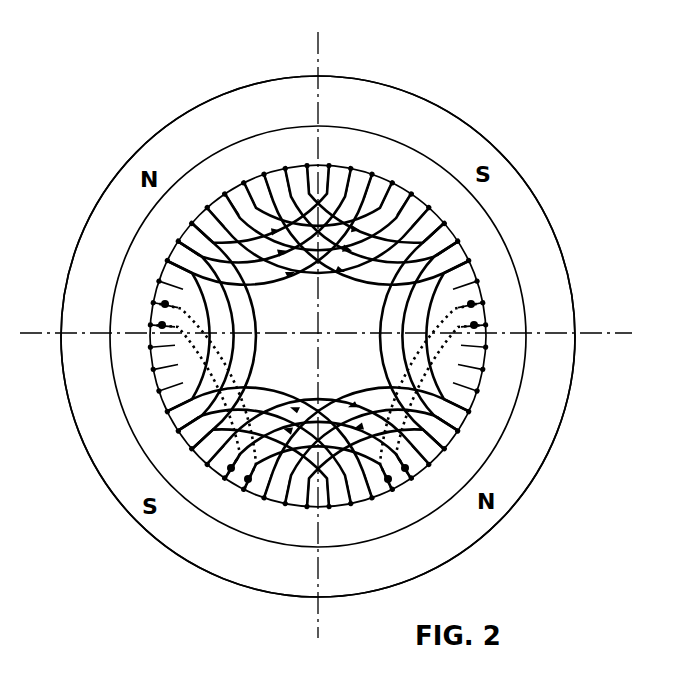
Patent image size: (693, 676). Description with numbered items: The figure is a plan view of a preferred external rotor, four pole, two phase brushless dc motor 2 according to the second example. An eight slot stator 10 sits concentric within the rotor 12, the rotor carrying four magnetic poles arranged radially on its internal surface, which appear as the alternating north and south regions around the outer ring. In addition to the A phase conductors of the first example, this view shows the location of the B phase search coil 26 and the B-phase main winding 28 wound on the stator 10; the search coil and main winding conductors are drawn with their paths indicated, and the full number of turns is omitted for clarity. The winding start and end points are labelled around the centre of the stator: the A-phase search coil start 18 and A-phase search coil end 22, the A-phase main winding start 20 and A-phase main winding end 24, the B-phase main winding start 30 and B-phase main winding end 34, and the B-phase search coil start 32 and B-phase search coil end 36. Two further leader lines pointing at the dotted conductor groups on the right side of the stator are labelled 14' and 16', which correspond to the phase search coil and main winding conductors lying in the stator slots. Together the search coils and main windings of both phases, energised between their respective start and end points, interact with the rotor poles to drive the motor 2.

The brushless dc motor 2 is at (187, 93).
The stator assembly 10 is at (395, 187).
The rotor assembly 12 is at (560, 234).
The winding conductors 14' is at (520, 391).
The winding coil 16' is at (508, 419).
The A-phase search coil start 18 is at (382, 300).
The A-phase main winding start 20 is at (387, 323).
The A-phase search coil end 22 is at (387, 360).
The A-phase main winding end 24 is at (347, 374).
The B phase search coil 26 is at (205, 382).
The B-phase main winding 28 is at (180, 390).
The B-phase main winding start 30 is at (262, 297).
The B-phase search coil start 32 is at (268, 326).
The B-phase main winding end 34 is at (292, 338).
The B-phase search coil end 36 is at (300, 362).